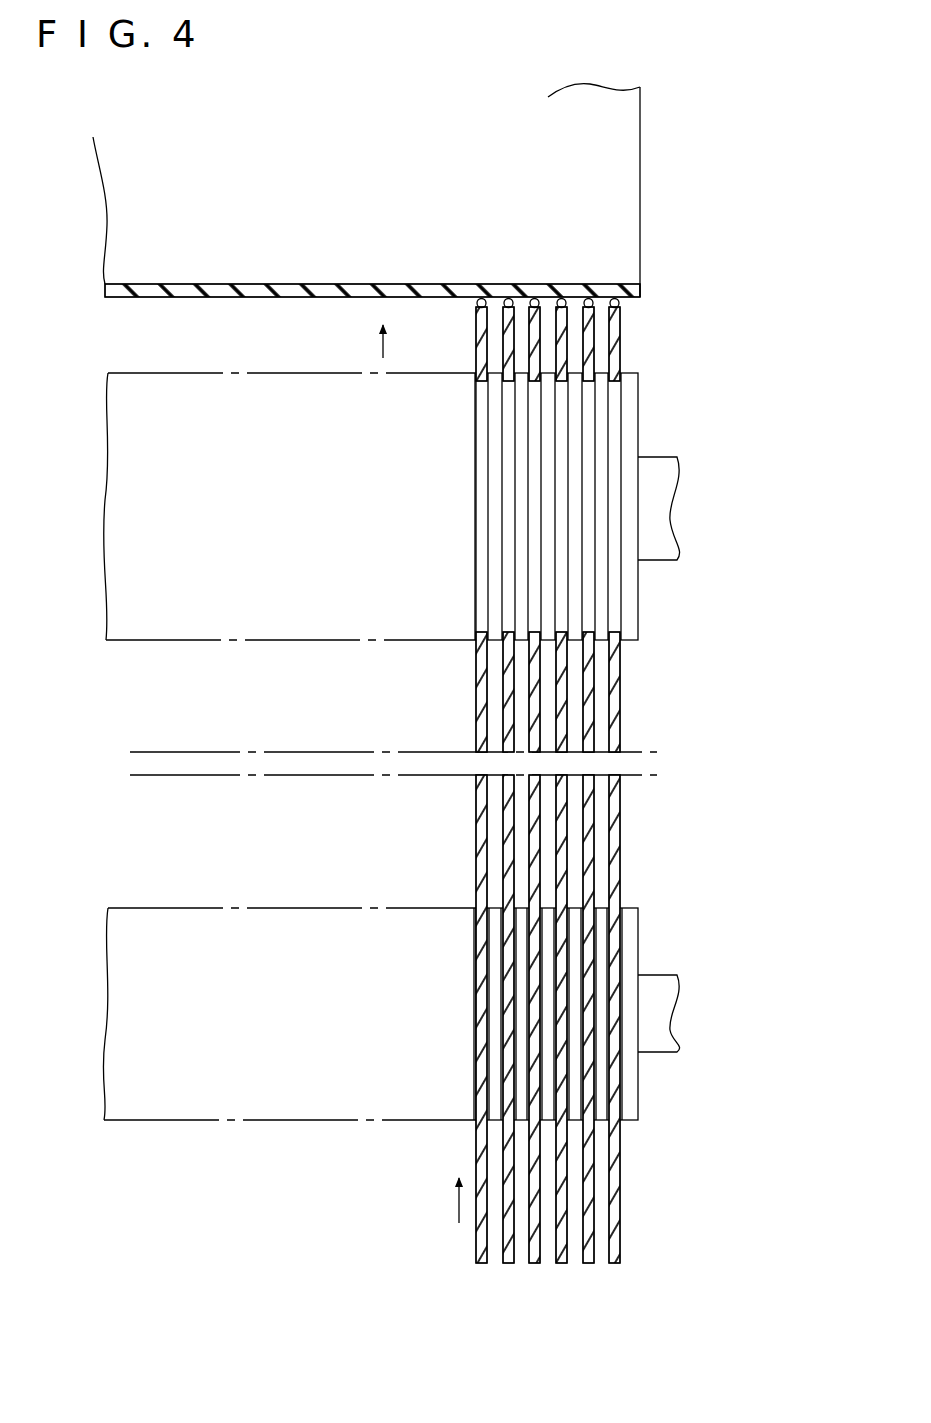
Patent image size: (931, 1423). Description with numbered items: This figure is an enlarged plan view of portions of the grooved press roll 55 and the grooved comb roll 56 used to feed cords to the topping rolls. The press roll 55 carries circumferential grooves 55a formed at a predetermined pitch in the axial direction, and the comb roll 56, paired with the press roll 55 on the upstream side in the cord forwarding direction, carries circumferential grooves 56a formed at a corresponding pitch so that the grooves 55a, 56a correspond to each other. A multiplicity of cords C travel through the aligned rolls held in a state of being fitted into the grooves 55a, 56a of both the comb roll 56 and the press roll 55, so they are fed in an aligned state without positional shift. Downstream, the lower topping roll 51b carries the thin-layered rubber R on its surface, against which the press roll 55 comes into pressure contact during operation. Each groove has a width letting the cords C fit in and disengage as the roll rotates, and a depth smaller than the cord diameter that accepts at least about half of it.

The lower topping roll 51b is at (623, 200).
The thin-layered rubber R is at (343, 296).
The grooved press roll 55 is at (642, 408).
The circumferential grooves of the press roll 55a is at (590, 598).
The cords C is at (588, 727).
The grooved comb roll 56 is at (641, 925).
The circumferential grooves of the comb roll 56a is at (506, 906).